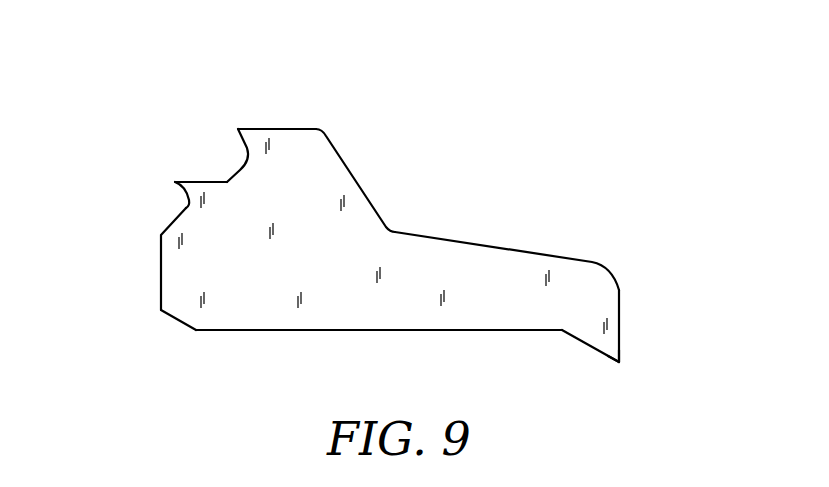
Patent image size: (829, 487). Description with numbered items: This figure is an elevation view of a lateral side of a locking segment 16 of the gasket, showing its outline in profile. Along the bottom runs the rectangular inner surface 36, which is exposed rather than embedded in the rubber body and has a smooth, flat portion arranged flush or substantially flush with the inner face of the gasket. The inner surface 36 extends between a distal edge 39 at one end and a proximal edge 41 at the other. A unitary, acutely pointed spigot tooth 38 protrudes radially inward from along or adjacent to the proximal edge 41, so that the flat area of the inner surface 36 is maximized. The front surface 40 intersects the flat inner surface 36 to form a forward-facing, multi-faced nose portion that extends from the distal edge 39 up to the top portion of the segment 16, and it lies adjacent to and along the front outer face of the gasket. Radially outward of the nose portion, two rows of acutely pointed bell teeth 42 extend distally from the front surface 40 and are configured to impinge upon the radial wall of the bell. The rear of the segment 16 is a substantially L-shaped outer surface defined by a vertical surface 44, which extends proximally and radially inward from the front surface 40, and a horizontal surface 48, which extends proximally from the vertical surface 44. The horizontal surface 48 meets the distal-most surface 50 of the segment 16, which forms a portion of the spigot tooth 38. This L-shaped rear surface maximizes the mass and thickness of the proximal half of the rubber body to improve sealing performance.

The segment 16 is at (472, 130).
The inner surface 36 is at (263, 332).
The spigot tooth 38 is at (598, 352).
The distal edge 39 is at (196, 333).
The front surface 40 is at (284, 128).
The proximal edge 41 is at (621, 364).
The bell teeth 42 is at (236, 129).
The vertical surface 44 is at (360, 187).
The horizontal surface 48 is at (460, 237).
The distal-most surface 50 is at (620, 312).